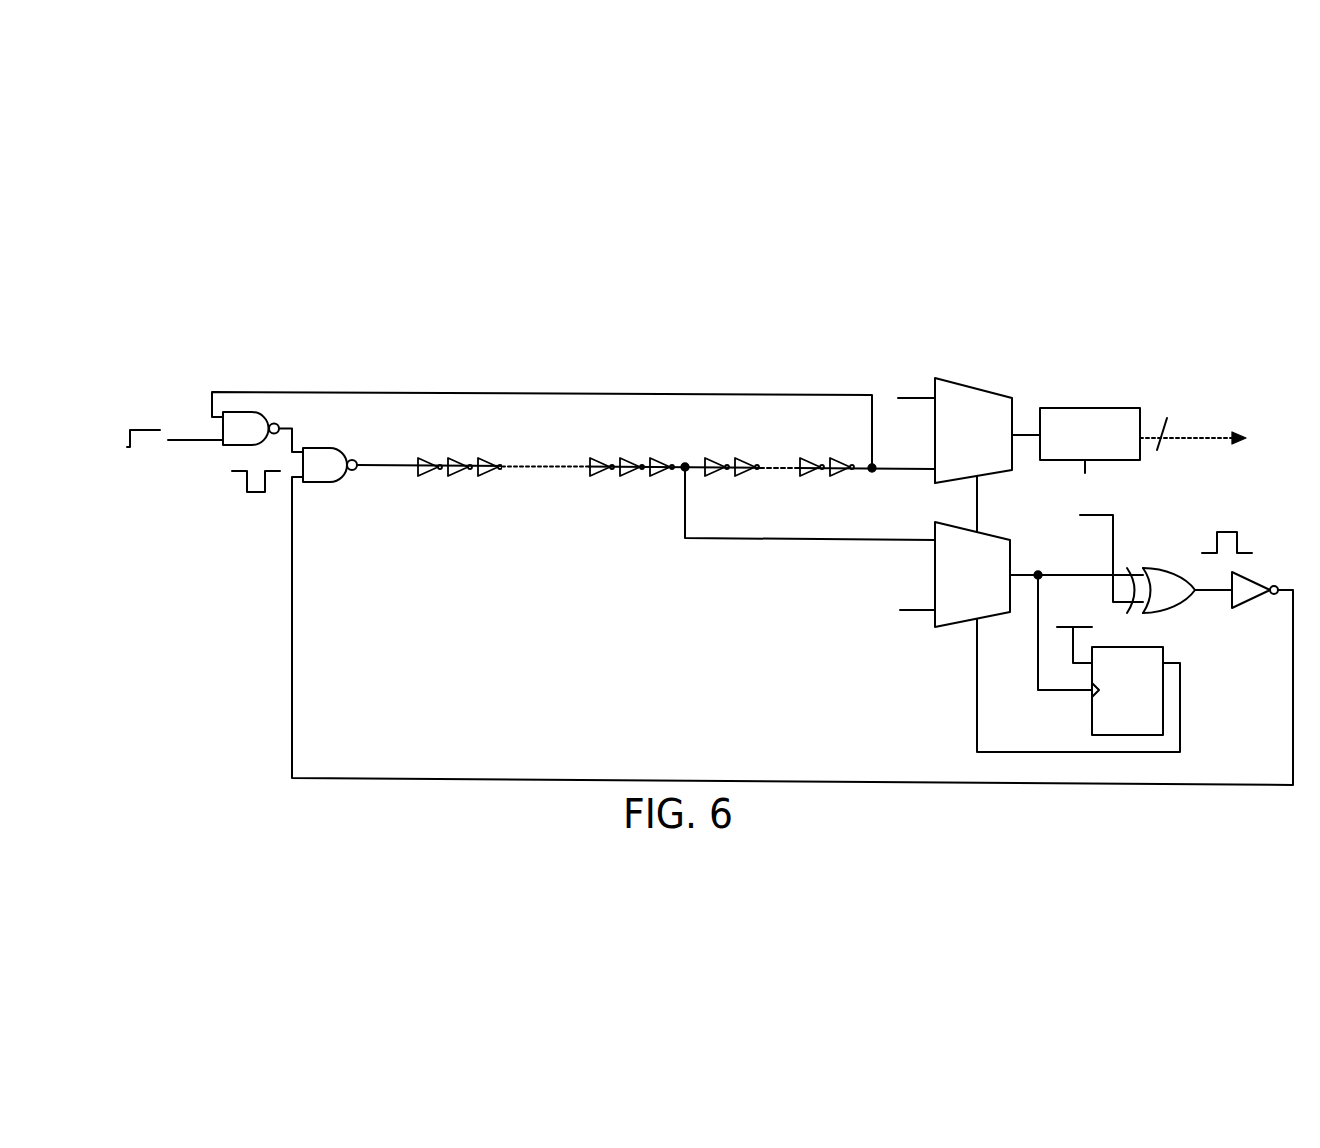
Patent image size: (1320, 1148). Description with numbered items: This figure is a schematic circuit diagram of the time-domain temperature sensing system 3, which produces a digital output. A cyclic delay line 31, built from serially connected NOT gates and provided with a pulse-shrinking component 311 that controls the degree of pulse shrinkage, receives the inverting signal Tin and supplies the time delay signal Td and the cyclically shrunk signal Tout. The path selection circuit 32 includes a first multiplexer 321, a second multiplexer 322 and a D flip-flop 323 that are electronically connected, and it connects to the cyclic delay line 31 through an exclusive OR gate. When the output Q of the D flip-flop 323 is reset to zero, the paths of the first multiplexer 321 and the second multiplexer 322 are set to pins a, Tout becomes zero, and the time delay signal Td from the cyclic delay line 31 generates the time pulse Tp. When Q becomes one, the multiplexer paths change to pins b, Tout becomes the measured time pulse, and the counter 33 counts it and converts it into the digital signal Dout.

The time-domain temperature sensing system 3 is at (694, 344).
The cyclic delay line 31 is at (450, 457).
The pulse-shrinking component 311 is at (199, 399).
The path selection circuit 32 is at (917, 651).
The first multiplexer 321 is at (982, 553).
The second multiplexer 322 is at (985, 412).
The D flip-flop 323 is at (1158, 700).
The counter 33 is at (1082, 423).